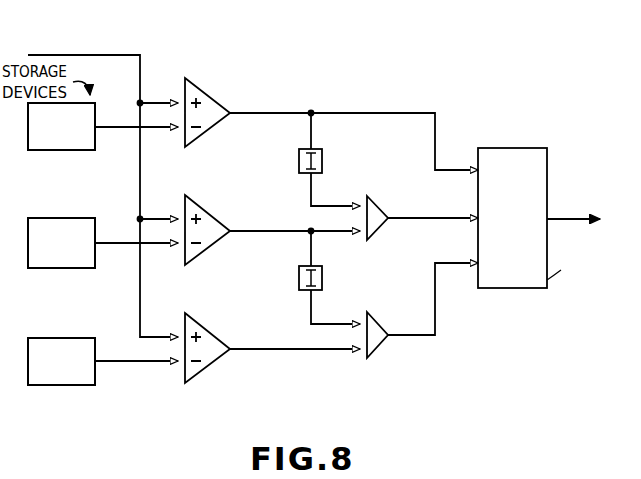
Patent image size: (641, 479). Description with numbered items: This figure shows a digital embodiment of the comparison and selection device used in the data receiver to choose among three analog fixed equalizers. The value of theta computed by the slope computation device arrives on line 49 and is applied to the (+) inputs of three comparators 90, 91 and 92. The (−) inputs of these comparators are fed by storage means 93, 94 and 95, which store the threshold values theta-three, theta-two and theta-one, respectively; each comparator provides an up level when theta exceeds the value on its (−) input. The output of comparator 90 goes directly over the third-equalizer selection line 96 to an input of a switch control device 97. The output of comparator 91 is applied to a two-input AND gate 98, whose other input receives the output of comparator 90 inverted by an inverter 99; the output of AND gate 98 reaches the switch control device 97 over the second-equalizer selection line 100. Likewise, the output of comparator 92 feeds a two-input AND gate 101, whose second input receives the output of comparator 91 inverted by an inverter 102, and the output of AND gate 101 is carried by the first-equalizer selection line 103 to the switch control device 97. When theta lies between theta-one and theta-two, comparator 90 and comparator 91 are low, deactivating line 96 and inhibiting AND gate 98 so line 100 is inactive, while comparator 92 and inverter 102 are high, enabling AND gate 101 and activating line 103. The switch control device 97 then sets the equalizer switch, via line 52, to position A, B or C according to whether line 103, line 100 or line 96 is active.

The line 49 is at (72, 55).
The line 52 is at (550, 218).
The comparator 90 is at (216, 100).
The comparator 91 is at (197, 203).
The comparator 92 is at (197, 321).
The storage means 93 is at (43, 150).
The storage means 94 is at (43, 268).
The storage means 95 is at (43, 385).
The equalizer EQZ 3 selection line 96 is at (395, 115).
The switch control device 97 is at (490, 288).
The AND gate 98 is at (369, 200).
The inverter 99 is at (298, 158).
The equalizer EQZ 2 selection line 100 is at (428, 220).
The AND gate 101 is at (378, 355).
The inverter 102 is at (298, 280).
The equalizer EQZ 1 selection line 103 is at (412, 337).